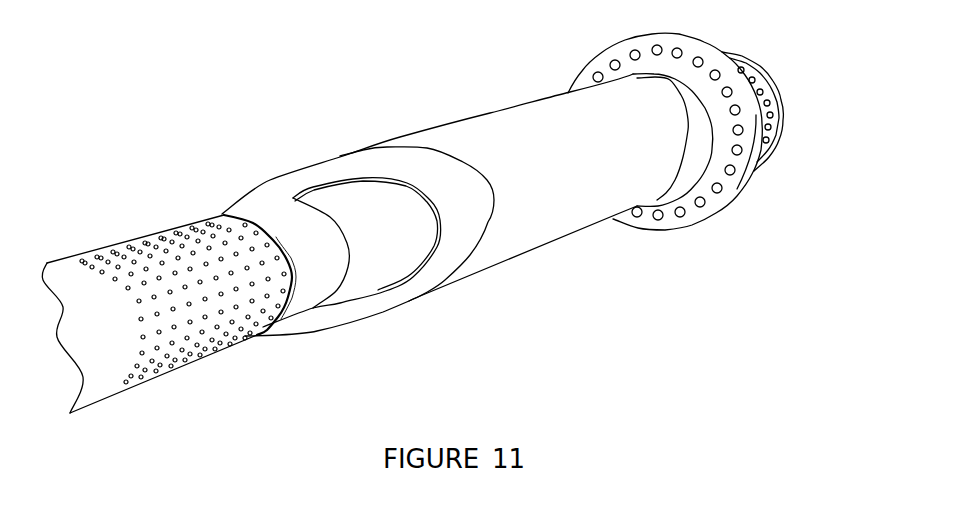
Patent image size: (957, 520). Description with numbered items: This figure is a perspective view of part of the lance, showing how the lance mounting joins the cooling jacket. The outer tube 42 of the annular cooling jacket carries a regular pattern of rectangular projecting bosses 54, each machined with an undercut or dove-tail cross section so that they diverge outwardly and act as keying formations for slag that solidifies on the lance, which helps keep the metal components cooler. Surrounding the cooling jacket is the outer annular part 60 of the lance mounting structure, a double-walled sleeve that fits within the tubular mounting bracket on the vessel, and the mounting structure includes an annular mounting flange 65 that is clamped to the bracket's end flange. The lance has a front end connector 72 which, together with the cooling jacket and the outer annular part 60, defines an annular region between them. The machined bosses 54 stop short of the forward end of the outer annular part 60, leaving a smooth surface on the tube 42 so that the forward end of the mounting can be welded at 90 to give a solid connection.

The outer tube 42 is at (280, 216).
The projecting bosses 54 is at (141, 240).
The outer annular part 60 is at (503, 248).
The annular mounting flange 65 is at (733, 193).
The front end connector 72 is at (337, 173).
The weld 90 is at (383, 283).